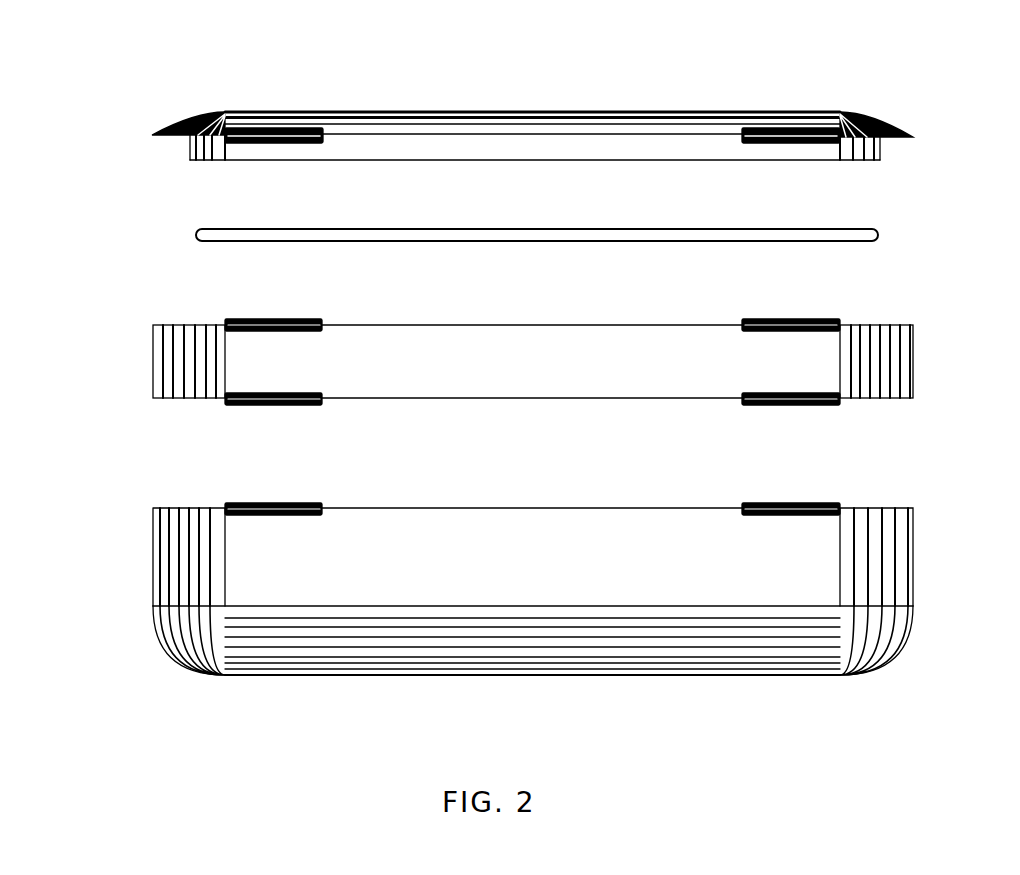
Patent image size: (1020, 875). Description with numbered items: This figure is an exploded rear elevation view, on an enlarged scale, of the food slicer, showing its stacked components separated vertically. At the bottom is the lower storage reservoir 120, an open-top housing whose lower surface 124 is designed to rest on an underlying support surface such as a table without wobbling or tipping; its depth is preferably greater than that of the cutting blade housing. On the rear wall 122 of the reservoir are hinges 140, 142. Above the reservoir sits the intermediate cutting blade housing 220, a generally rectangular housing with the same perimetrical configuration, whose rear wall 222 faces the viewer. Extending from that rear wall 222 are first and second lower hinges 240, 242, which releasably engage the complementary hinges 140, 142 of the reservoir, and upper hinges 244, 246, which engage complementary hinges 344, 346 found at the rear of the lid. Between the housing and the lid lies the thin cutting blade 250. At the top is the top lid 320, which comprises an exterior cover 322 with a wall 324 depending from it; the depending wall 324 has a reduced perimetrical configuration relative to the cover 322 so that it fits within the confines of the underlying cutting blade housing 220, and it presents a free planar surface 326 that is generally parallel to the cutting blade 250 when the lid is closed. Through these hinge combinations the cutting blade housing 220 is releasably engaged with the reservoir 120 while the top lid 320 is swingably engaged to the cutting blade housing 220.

The lower storage reservoir 120 is at (487, 595).
The rear wall 122 is at (533, 557).
The lower surface 124 is at (283, 676).
The hinge 140 is at (250, 503).
The hinge 142 is at (765, 503).
The cutting blade housing 220 is at (470, 364).
The rear wall 222 is at (533, 361).
The first lower hinge 240 is at (293, 404).
The second lower hinge 242 is at (763, 406).
The upper hinge 244 is at (303, 318).
The upper hinge 246 is at (757, 318).
The cutting blade 250 is at (190, 232).
The top lid 320 is at (490, 117).
The exterior cover 322 is at (410, 117).
The depending wall 324 is at (610, 152).
The free planar surface 326 is at (520, 160).
The hinge 344 is at (240, 140).
The hinge 346 is at (760, 142).